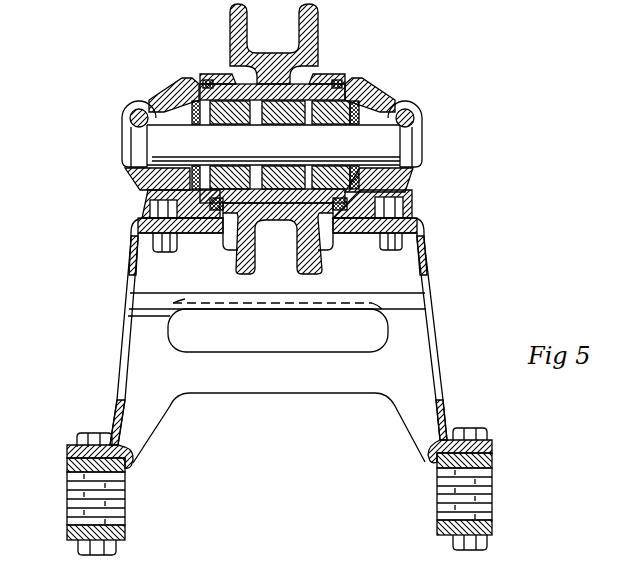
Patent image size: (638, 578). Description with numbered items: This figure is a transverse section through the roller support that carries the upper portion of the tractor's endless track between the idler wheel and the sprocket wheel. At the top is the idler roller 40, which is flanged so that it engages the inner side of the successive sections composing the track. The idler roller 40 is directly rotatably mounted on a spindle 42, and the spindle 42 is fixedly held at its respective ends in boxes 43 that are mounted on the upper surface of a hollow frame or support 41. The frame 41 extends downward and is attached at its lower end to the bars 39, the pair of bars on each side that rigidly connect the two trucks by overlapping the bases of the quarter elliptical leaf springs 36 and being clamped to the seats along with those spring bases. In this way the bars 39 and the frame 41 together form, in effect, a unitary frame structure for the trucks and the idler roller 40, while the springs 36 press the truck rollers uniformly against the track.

The quarter elliptical leaf spring 36 is at (66, 498).
The bars 39 is at (66, 464).
The idler roller 40 is at (229, 31).
The hollow frame or support 41 is at (125, 307).
The spindle 42 is at (428, 137).
The boxes 43 is at (152, 108).